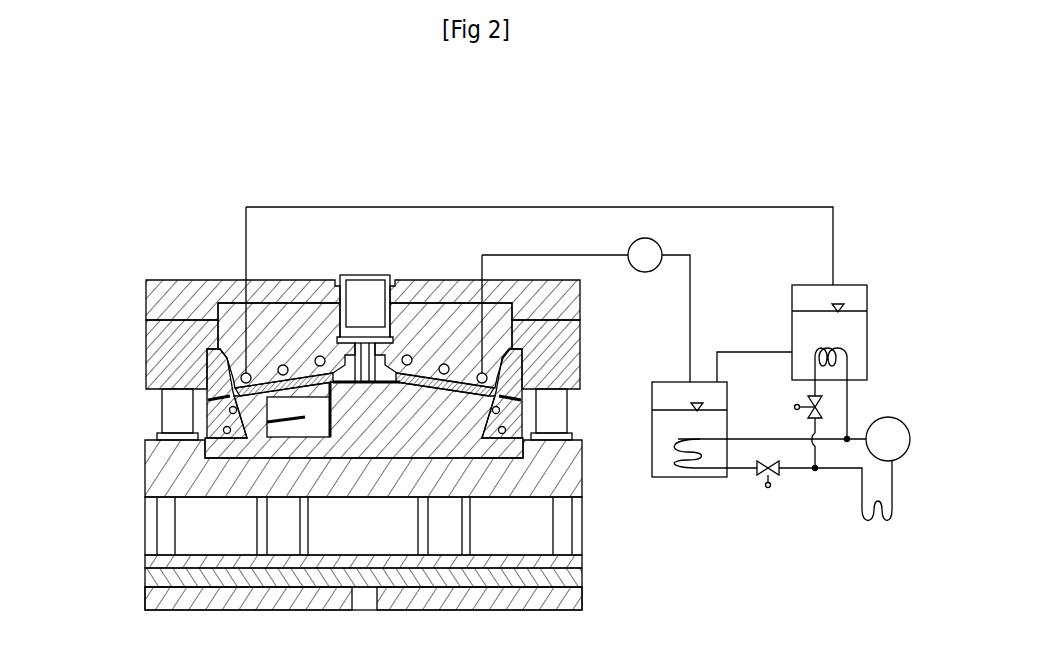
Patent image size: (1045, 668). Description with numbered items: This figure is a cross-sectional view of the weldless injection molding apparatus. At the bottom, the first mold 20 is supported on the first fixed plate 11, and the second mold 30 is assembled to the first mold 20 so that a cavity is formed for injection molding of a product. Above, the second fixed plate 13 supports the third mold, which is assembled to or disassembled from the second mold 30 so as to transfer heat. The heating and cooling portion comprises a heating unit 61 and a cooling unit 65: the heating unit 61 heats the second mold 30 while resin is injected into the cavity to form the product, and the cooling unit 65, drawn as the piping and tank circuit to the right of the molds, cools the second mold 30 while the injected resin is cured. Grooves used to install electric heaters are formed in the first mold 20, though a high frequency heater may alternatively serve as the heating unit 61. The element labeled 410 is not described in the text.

The second fixed plate 13 is at (158, 296).
The upper core insert 410 is at (228, 313).
The second mold 30 is at (212, 372).
The heating unit 61 is at (212, 420).
The first mold 20 is at (222, 452).
The first fixed plate 11 is at (572, 562).
The cooling unit 65 is at (812, 155).